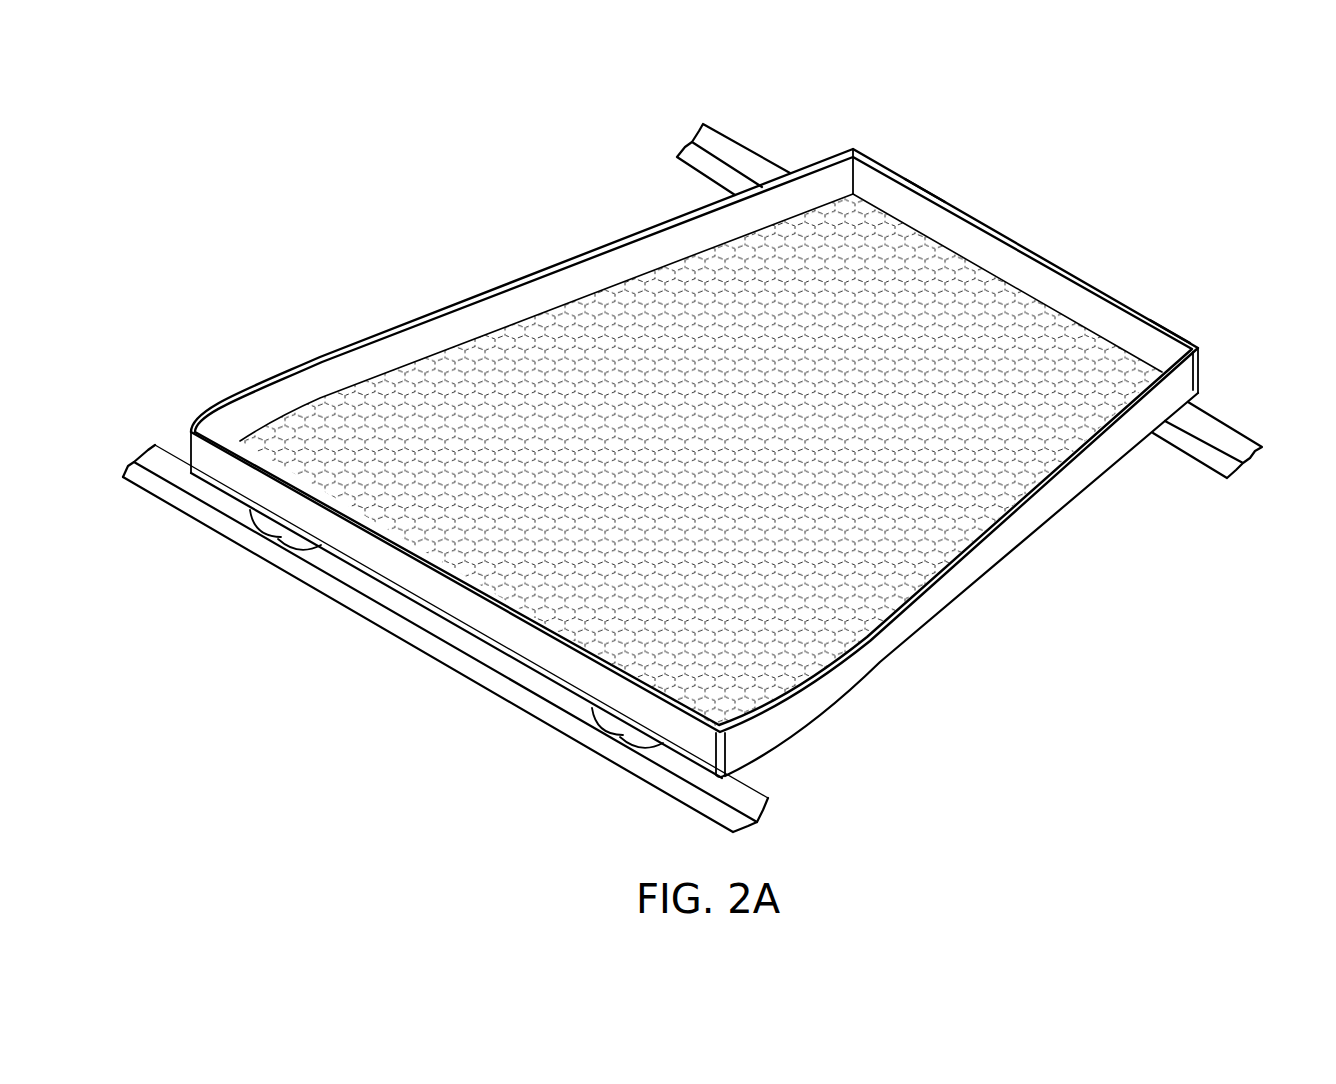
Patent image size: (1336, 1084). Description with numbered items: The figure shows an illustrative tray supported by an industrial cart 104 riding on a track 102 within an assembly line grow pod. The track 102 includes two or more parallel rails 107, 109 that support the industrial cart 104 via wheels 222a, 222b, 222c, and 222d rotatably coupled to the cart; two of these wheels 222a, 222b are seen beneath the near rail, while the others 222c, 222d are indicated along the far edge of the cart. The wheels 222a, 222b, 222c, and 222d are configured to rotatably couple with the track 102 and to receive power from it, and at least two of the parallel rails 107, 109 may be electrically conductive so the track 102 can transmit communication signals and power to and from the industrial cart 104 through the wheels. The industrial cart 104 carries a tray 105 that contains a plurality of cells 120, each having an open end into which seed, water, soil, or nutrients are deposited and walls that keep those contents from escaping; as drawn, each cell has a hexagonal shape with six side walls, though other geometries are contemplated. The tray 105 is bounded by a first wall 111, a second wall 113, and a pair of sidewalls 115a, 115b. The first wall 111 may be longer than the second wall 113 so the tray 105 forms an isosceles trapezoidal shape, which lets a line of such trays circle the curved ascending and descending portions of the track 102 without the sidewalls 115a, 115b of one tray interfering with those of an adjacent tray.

The track 102 is at (135, 435).
The industrial cart 104 is at (589, 234).
The tray 105 is at (417, 616).
The parallel rail 107 is at (672, 783).
The parallel rail 109 is at (1240, 436).
The first wall 111 is at (520, 642).
The second wall 113 is at (1023, 261).
The sidewall 115a is at (973, 572).
The sidewall 115b is at (326, 367).
The cells 120 is at (469, 352).
The wheel 222a is at (278, 540).
The wheel 222b is at (622, 733).
The wheel 222c is at (925, 174).
The wheel 222d is at (1183, 323).